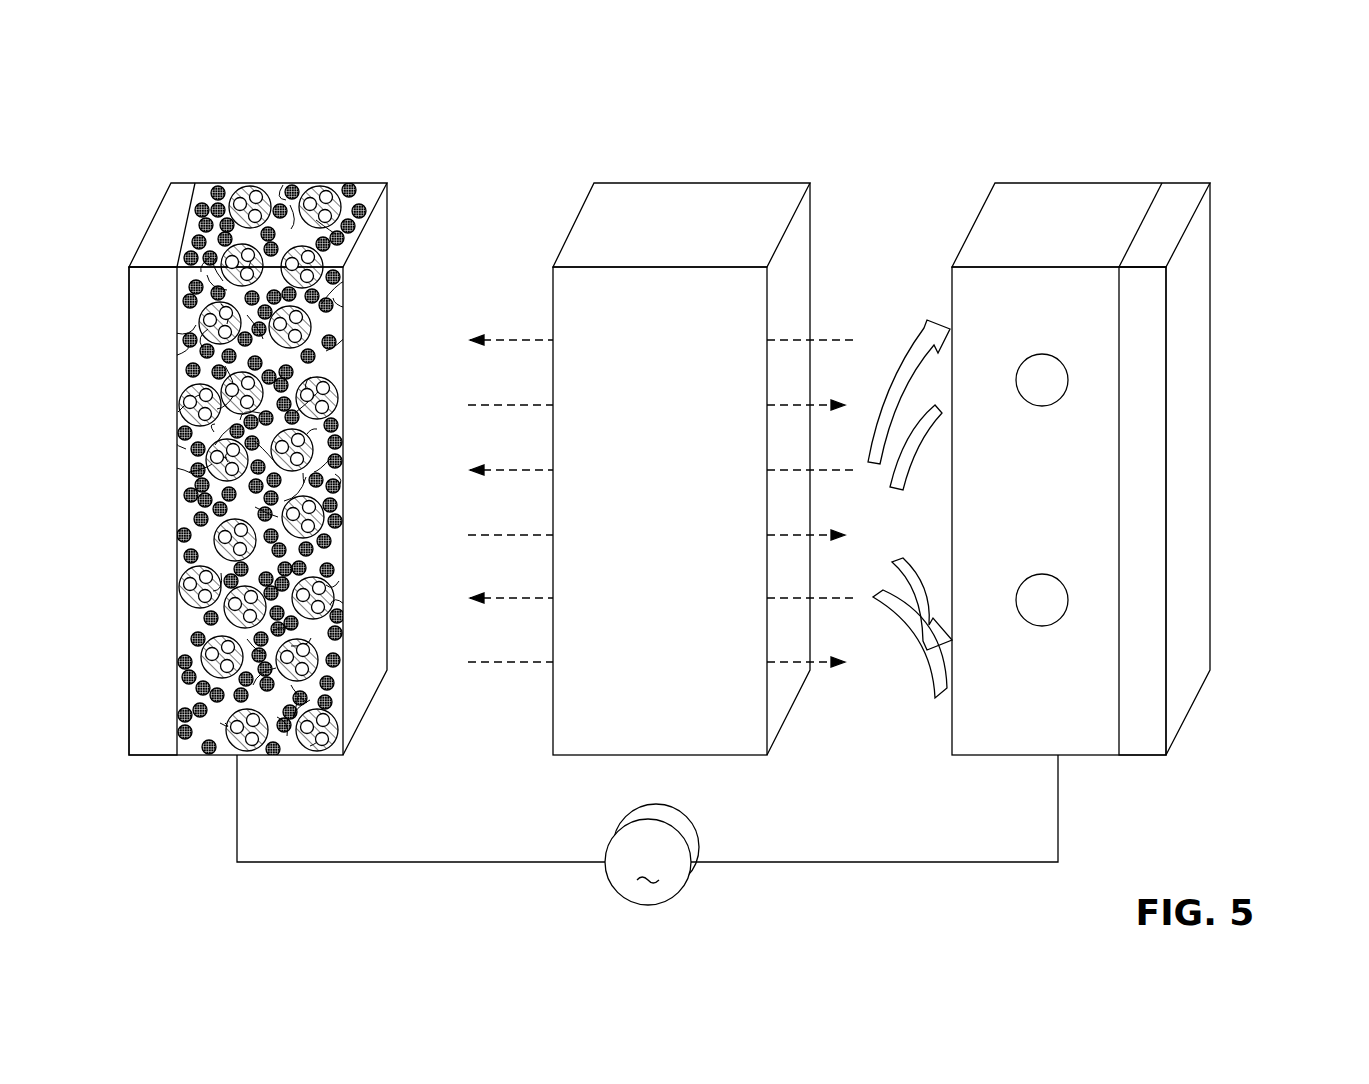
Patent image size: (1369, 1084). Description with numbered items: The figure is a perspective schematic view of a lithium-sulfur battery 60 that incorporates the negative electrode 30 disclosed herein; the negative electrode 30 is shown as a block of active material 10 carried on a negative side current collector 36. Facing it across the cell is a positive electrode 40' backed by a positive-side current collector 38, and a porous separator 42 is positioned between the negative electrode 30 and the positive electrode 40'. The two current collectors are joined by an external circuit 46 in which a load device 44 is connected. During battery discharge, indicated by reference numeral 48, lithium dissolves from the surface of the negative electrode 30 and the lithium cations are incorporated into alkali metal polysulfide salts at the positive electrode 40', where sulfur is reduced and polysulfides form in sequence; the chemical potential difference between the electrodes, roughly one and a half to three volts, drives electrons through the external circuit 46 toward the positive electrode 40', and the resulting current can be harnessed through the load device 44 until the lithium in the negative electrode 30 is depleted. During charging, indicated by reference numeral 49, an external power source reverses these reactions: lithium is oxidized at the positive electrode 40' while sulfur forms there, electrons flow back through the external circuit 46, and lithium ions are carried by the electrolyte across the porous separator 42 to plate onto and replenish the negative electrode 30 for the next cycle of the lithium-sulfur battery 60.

The negative electrode composite 10 is at (352, 748).
The negative electrode 30 is at (293, 176).
The negative side current collector 36 is at (152, 490).
The positive-side current collector 38 is at (1187, 298).
The positive electrode 40' is at (1119, 438).
The porous separator 42 is at (671, 176).
The load device 44 is at (655, 854).
The external circuit 46 is at (945, 862).
The battery discharge 48 is at (820, 405).
The charging 49 is at (520, 340).
The lithium-sulfur battery 60 is at (1232, 122).